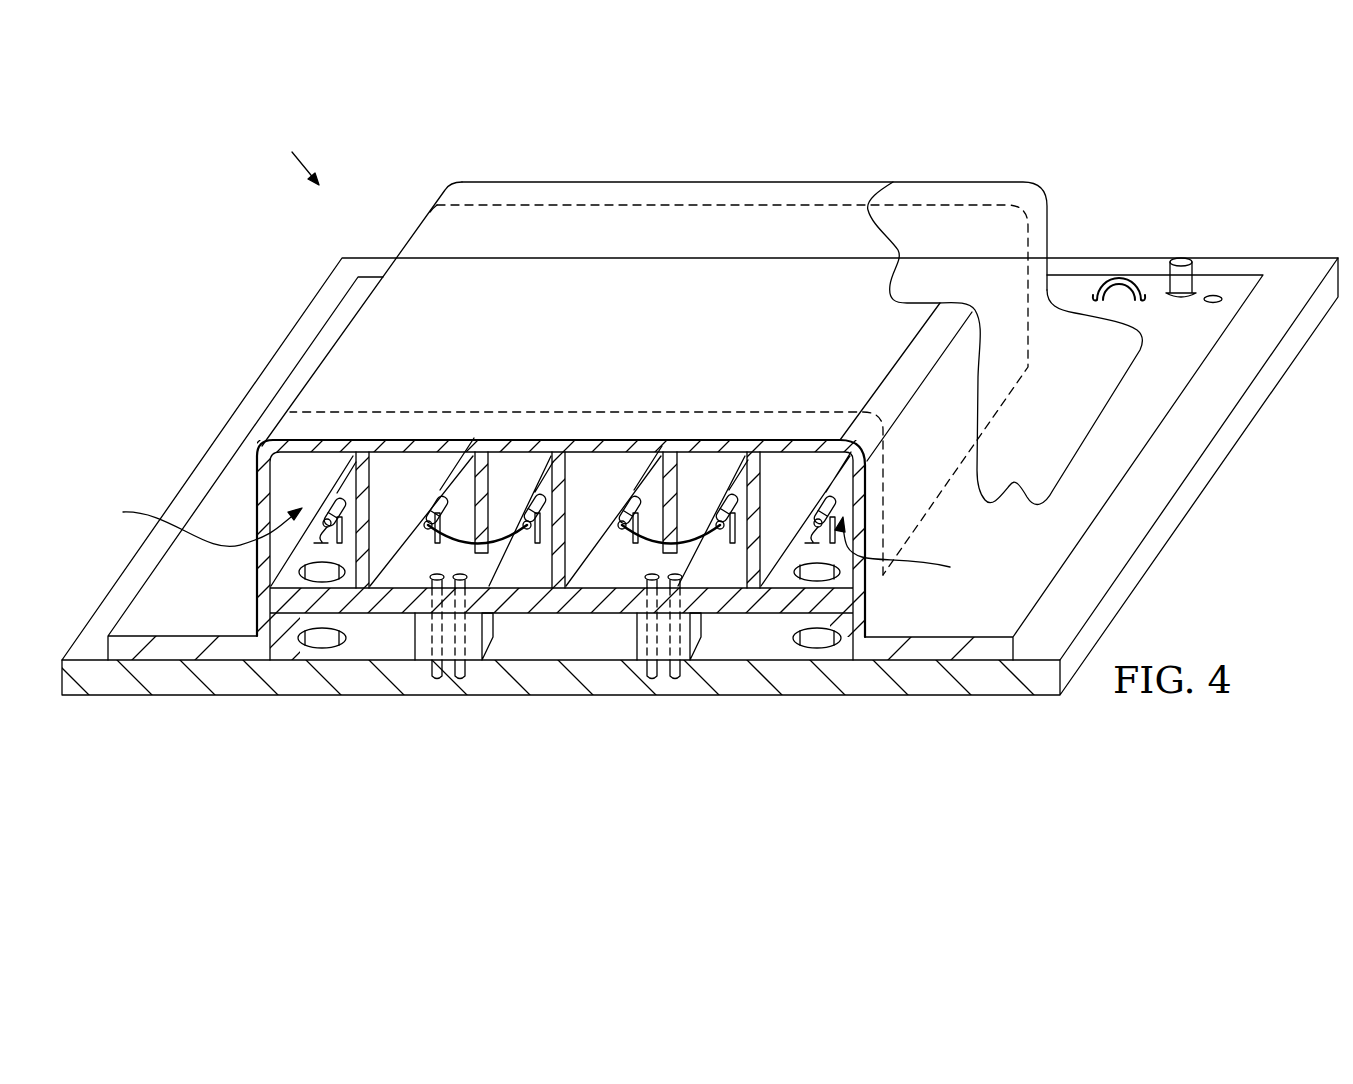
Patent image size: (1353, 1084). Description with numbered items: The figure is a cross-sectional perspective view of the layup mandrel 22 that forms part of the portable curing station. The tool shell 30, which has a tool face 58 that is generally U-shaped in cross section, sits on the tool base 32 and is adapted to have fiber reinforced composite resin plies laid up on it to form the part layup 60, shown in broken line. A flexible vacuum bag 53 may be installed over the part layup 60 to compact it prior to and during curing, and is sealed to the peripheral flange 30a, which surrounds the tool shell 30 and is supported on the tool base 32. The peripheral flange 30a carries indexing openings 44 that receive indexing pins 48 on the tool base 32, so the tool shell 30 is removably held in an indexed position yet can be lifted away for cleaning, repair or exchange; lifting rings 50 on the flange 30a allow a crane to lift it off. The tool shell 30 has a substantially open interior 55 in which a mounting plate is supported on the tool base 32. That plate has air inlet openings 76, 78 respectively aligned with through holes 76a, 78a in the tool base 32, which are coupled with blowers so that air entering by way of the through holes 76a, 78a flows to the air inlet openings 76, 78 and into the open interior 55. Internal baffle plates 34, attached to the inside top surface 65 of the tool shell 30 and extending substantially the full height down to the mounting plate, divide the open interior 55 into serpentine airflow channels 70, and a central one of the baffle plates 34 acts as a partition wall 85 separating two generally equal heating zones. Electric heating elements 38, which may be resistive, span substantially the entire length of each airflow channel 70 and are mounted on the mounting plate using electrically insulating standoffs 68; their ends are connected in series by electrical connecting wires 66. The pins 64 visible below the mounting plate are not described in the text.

The layup mandrel 22 is at (293, 153).
The tool shell 30 is at (420, 243).
The peripheral flange 30a is at (1113, 453).
The tool base 32 is at (173, 696).
The baffle plates 34 is at (355, 590).
The electric heating elements 38 is at (433, 490).
The indexing openings 44 is at (1185, 297).
The indexing pins 48 is at (1182, 262).
The lifting rings 50 is at (1117, 277).
The flexible vacuum bag 53 is at (963, 185).
The open interior 55 is at (278, 510).
The tool face 58 is at (742, 182).
The part layup 60 is at (624, 205).
The pins 64 is at (437, 679).
The inside top surface 65 is at (812, 440).
The electrical connecting wires 66 is at (467, 548).
The standoffs 68 is at (342, 490).
The serpentine airflow channels 70 is at (536, 542).
The air inlet opening 76 is at (323, 567).
The through hole 76a is at (323, 648).
The air inlet opening 78 is at (826, 572).
The through hole 78a is at (817, 648).
The partition wall 85 is at (592, 470).